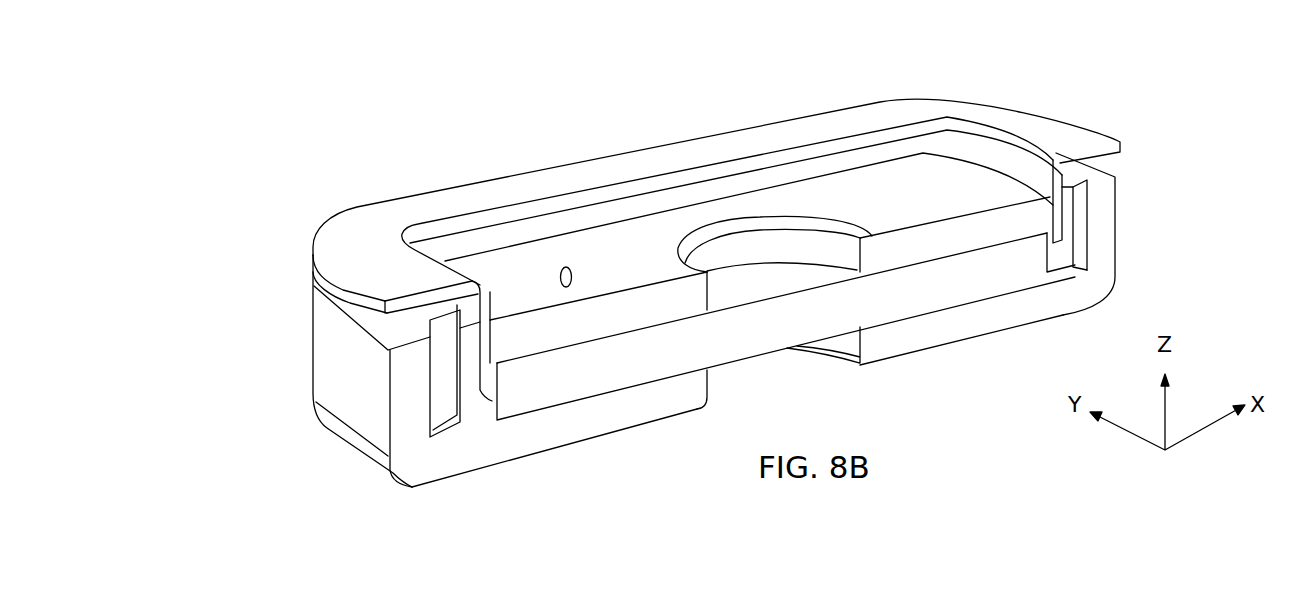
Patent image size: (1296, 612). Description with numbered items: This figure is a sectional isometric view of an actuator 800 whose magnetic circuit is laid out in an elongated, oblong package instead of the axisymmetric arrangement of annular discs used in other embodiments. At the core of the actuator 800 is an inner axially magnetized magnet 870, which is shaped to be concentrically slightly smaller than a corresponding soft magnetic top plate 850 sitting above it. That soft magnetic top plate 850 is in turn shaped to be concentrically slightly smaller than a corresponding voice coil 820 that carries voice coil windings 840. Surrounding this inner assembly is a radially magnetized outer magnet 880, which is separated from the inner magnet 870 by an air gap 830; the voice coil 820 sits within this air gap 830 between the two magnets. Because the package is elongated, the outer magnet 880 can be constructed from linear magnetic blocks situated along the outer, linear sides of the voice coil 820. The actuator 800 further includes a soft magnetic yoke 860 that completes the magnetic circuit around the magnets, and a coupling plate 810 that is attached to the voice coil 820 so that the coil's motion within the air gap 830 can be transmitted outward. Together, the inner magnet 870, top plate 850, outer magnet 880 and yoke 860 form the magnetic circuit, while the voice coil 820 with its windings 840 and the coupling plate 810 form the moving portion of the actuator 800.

The actuator 800 is at (578, 117).
The coupling plate 810 is at (345, 242).
The voice coil 820 is at (490, 340).
The air gap 830 is at (462, 397).
The voice coil windings 840 is at (470, 360).
The soft magnetic top plate 850 is at (973, 238).
The soft magnetic yoke 860 is at (1108, 222).
The inner axially magnetized magnet 870 is at (923, 297).
The radially magnetized outer magnet 880 is at (1080, 232).